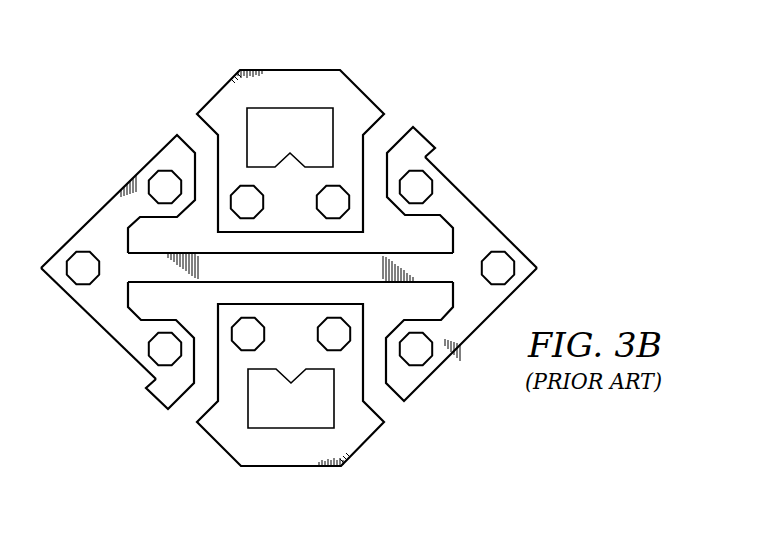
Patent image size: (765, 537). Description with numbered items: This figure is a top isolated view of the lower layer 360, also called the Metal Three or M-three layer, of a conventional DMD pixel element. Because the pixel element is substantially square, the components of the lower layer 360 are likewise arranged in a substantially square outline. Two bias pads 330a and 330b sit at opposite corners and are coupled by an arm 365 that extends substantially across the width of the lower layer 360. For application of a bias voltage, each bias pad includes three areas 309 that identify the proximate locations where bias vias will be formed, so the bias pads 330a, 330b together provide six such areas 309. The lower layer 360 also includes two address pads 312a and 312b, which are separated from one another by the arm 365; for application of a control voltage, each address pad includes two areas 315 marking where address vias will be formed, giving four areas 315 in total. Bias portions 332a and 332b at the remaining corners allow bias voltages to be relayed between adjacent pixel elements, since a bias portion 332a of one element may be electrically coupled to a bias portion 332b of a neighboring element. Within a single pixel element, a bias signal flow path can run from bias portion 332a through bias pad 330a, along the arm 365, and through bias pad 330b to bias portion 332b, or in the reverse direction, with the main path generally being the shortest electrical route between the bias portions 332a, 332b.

The lower layer 360 is at (480, 75).
The address pad 312a is at (217, 447).
The address pad 312b is at (219, 90).
The area for formation of address via 315 is at (229, 203).
The area for formation of bias via 309 is at (428, 170).
The bias portion 332a is at (157, 403).
The bias portion 332b is at (447, 113).
The bias pad 330a is at (97, 327).
The bias pad 330b is at (506, 197).
The arm 365 is at (147, 253).